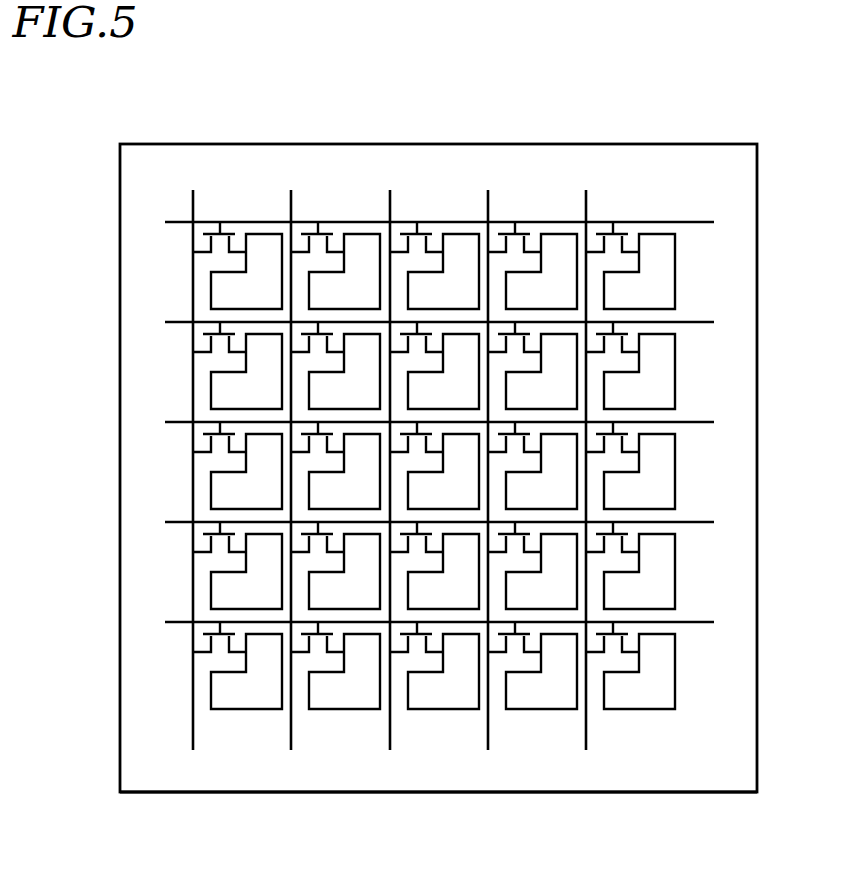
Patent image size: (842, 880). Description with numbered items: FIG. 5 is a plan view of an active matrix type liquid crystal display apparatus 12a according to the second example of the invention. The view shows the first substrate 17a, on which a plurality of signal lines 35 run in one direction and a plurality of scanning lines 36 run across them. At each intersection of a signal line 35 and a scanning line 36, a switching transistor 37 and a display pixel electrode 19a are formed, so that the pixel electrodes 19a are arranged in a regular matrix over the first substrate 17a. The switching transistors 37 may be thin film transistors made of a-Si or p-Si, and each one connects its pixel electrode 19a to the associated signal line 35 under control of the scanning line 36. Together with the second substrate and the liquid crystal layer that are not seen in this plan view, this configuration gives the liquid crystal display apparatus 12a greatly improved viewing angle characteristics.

The active matrix type liquid crystal display apparatus 12a is at (82, 160).
The first substrate 17a is at (428, 772).
The display pixel electrode 19a is at (663, 285).
The signal line 35 is at (190, 202).
The scanning line 36 is at (170, 223).
The switching transistor 37 is at (625, 233).